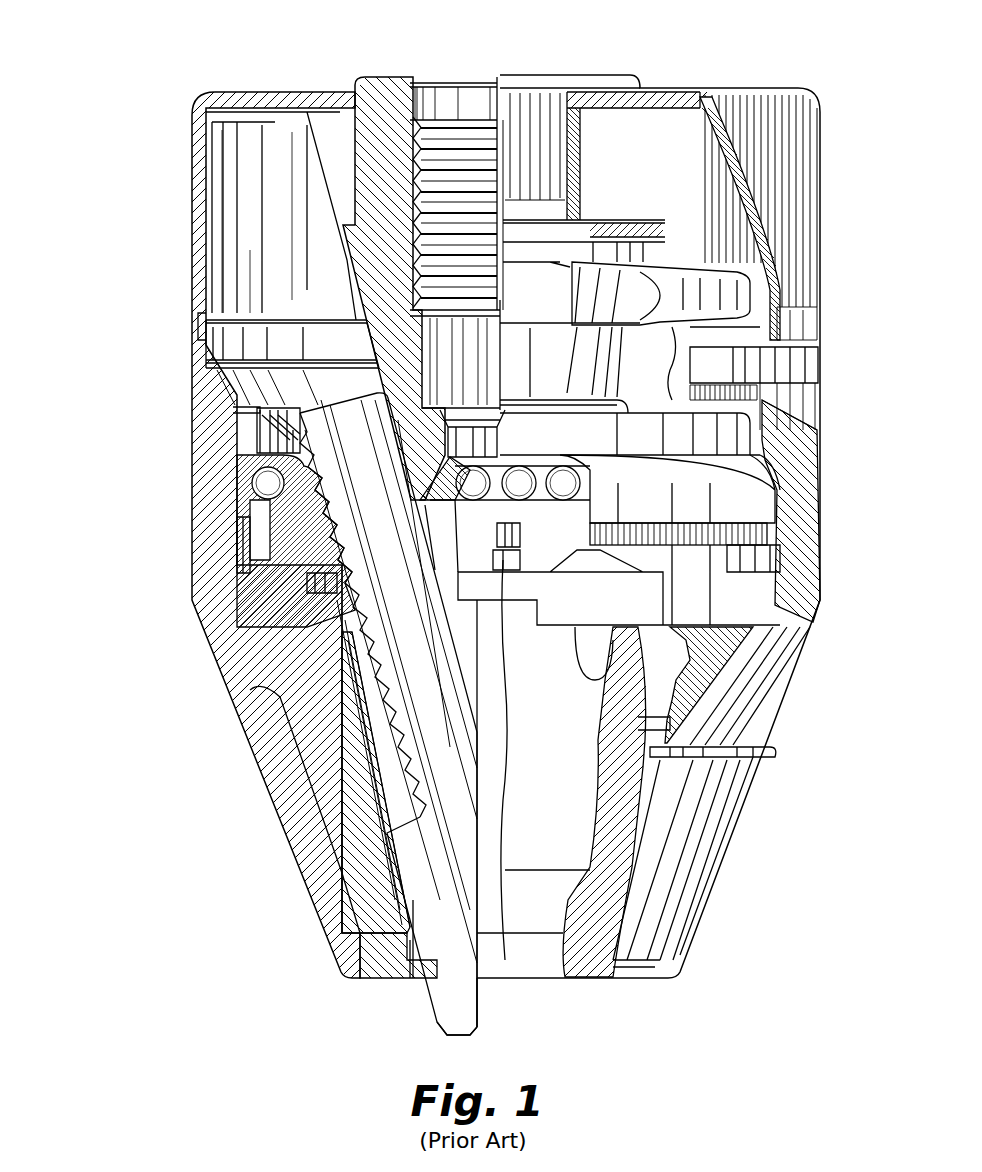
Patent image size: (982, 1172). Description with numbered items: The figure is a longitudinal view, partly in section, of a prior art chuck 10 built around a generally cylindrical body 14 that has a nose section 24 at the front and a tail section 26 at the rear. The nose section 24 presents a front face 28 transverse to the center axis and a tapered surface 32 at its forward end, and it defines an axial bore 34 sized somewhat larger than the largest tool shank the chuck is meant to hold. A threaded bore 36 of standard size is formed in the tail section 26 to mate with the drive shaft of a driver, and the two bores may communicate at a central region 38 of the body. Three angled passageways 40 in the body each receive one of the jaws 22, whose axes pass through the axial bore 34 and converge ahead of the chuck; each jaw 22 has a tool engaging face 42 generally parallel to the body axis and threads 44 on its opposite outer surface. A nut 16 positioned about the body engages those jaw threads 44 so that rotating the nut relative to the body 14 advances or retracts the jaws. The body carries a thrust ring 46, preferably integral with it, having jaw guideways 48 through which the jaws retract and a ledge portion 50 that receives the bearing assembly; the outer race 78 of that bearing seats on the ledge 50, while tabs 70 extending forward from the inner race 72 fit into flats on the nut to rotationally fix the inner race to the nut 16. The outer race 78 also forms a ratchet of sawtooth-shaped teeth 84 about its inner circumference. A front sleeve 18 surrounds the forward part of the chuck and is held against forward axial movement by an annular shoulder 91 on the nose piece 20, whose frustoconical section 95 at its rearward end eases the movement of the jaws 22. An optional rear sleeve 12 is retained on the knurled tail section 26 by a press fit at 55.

The chuck 10 is at (140, 520).
The rear sleeve 12 is at (192, 150).
The body 14 is at (377, 352).
The nut 16 is at (273, 523).
The front sleeve 18 is at (213, 673).
The nose piece 20 is at (300, 884).
The jaws 22 is at (465, 650).
The nose section 24 is at (342, 813).
The tail section 26 is at (645, 84).
The front face 28 is at (380, 960).
The tapered surface 32 is at (353, 910).
The axial bore 34 is at (438, 992).
The threaded bore 36 is at (463, 140).
The central region 38 is at (500, 440).
The passageways 40 is at (343, 752).
The tool engaging face 42 is at (482, 1010).
The threads 44 is at (345, 690).
The thrust ring 46 is at (255, 415).
The jaw guideways 48 is at (273, 440).
The ledge portion 50 is at (540, 462).
The press fit 55 is at (354, 112).
The tabs 70 is at (250, 600).
The inner race 72 is at (247, 560).
The outer race 78 is at (242, 486).
The sawtooth-shaped teeth 84 is at (235, 525).
The annular shoulder 91 is at (340, 735).
The frustoconical section 95 is at (330, 660).